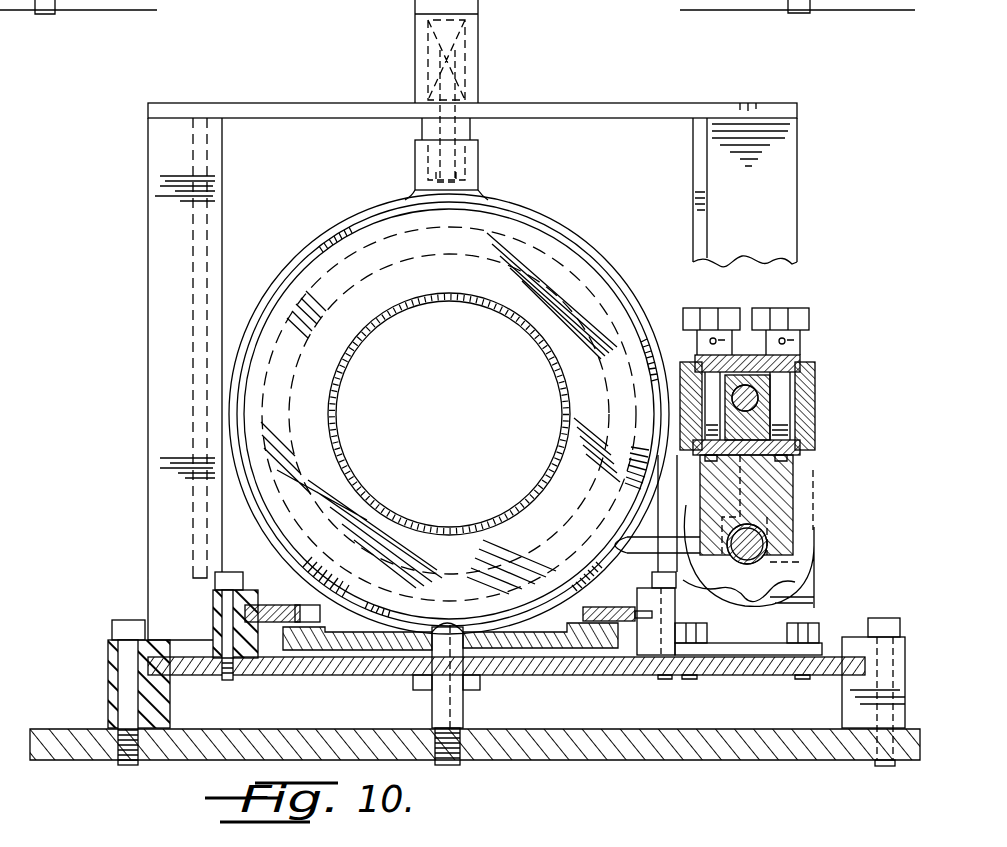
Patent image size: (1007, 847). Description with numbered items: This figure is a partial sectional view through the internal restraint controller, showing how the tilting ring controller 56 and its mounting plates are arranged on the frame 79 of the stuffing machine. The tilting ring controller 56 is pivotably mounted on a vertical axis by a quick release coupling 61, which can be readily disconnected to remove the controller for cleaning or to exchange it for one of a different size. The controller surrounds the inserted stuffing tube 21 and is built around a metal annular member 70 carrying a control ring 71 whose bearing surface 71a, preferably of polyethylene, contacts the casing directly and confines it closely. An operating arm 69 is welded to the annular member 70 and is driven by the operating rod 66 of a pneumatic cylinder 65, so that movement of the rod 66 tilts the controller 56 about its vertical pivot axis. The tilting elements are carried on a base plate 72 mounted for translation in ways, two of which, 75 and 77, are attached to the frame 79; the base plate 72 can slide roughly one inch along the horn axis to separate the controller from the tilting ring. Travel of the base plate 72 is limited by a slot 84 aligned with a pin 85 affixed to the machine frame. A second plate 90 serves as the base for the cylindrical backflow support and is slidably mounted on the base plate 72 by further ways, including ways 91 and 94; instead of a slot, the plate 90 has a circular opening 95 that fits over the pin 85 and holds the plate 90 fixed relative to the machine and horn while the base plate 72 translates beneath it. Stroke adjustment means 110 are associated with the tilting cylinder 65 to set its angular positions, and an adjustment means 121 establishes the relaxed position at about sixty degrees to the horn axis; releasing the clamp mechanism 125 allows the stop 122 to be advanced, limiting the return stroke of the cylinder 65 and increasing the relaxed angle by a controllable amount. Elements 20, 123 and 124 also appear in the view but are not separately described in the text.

The bearing ring 20 is at (392, 238).
The stuffing tube 21 is at (354, 338).
The tilting ring controller 56 is at (322, 232).
The quick release coupling 61 is at (470, 160).
The pneumatic cylinder 65 is at (805, 578).
The operating rod 66 is at (762, 545).
The operating arm 69 is at (685, 545).
The metal annular member 70 is at (555, 222).
The control ring 71 is at (575, 265).
The bearing surface 71a is at (580, 345).
The base plate 72 is at (300, 675).
The way 75 is at (842, 692).
The way 77 is at (108, 680).
The frame 79 is at (598, 762).
The slot 84 is at (422, 690).
The pin 85 is at (466, 702).
The plate 90 is at (545, 652).
The way 91 is at (658, 658).
The way 94 is at (215, 620).
The circular opening 95 is at (448, 630).
The stroke adjustment means 110 is at (791, 366).
The adjustment means 121 is at (813, 461).
The stop 122 is at (775, 568).
The clamp body 123 is at (793, 483).
The clamp pin 124 is at (758, 398).
The clamp mechanism 125 is at (735, 312).